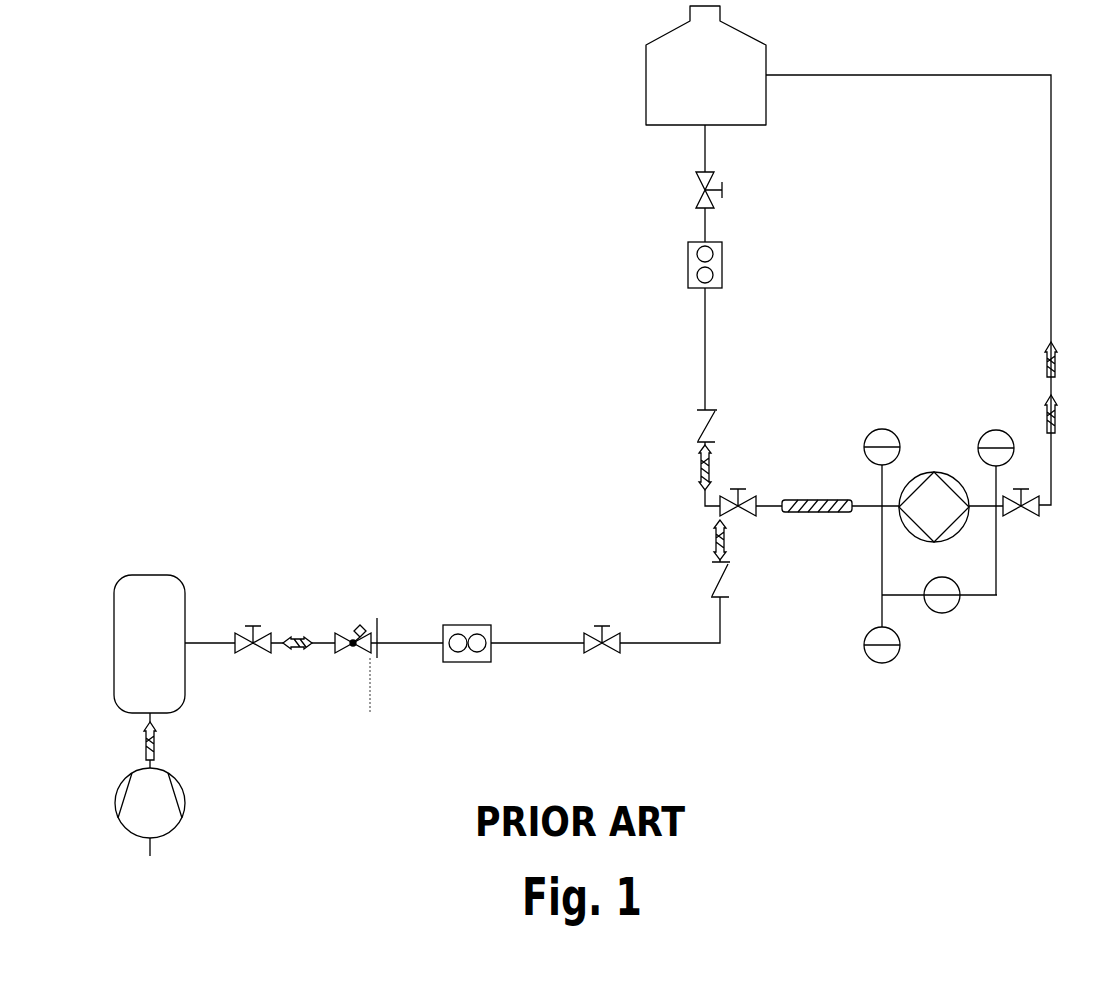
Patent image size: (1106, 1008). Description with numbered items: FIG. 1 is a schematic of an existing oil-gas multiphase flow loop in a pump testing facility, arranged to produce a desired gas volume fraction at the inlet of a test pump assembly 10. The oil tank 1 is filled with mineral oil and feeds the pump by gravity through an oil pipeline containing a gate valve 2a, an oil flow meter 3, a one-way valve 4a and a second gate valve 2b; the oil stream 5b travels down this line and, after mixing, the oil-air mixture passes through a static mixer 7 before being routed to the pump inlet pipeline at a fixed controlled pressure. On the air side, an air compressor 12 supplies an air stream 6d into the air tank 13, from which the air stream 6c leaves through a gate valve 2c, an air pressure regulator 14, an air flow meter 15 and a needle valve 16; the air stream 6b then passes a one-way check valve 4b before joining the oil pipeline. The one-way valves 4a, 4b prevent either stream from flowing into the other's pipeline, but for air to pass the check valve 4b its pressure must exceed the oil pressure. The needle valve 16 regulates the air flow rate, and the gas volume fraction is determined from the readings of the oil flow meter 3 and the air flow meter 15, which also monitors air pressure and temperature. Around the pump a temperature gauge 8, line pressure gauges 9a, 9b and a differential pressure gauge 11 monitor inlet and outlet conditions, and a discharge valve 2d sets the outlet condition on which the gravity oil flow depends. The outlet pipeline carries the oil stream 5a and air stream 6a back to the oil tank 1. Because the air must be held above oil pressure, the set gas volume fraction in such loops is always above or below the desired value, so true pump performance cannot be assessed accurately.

The oil tank 1 is at (706, 65).
The gate valve 2a is at (679, 189).
The gate valve 2b is at (747, 478).
The gate valve 2c is at (251, 669).
The discharge valve 2d is at (1027, 529).
The oil flow meter 3 is at (726, 265).
The one-way valve 4a is at (684, 424).
The one-way check valve 4b is at (697, 584).
The oil stream 5a is at (1027, 360).
The oil stream 5b is at (681, 467).
The air stream 6a is at (1030, 413).
The air stream 6b is at (699, 537).
The air stream 6c is at (300, 619).
The air stream 6d is at (174, 742).
The static mixer 7 is at (817, 529).
The temperature gauge 8 is at (882, 428).
The pressure gauge 9a is at (870, 662).
The pressure gauge 9b is at (990, 430).
The test pump assembly 10 is at (937, 470).
The differential pressure gauge 11 is at (950, 612).
The air compressor 12 is at (178, 826).
The air tank 13 is at (149, 644).
The air pressure regulator 14 is at (352, 655).
The air flow meter 15 is at (468, 621).
The needle valve 16 is at (605, 617).